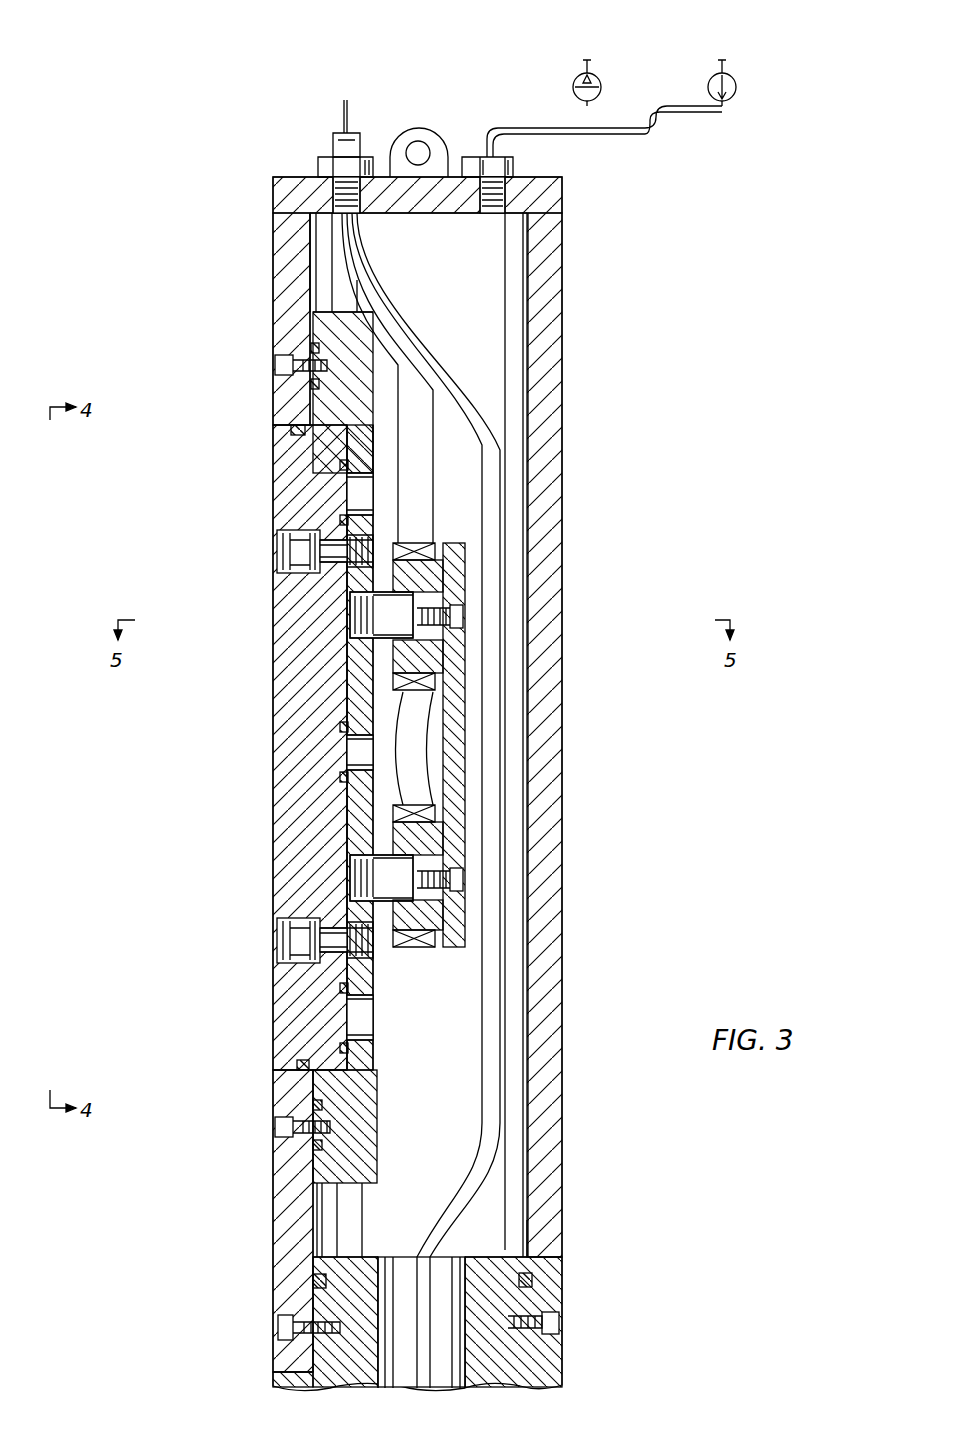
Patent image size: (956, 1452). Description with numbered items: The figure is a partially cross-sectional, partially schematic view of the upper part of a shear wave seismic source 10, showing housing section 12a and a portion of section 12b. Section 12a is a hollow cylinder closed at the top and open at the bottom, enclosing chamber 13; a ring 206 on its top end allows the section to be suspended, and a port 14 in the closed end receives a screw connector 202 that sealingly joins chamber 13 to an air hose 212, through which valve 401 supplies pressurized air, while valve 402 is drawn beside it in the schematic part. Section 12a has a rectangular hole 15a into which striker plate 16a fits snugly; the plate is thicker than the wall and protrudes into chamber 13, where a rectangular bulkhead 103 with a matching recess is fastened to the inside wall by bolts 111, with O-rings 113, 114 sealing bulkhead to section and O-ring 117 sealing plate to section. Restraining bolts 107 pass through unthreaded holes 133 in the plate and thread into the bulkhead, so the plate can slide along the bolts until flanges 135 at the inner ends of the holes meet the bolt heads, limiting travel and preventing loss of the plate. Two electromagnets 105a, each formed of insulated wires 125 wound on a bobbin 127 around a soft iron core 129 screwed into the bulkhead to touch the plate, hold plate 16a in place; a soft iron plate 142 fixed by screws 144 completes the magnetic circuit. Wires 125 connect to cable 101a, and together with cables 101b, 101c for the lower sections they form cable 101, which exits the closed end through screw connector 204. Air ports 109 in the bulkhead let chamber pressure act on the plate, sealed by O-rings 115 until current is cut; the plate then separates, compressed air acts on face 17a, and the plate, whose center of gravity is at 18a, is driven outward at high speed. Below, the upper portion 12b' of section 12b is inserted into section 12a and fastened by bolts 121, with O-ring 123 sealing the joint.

The seismic source 10 is at (617, 200).
The housing section 12a is at (548, 271).
The housing section 12b is at (460, 1322).
The upper portion of section 12b 12b' is at (575, 1225).
The chamber 13 is at (421, 264).
The port 14 is at (487, 218).
The rectangular hole 15a is at (296, 425).
The striker plate 16a is at (345, 897).
The face of striker plate 17a is at (345, 832).
The center of gravity 18a is at (312, 772).
The cable 101 is at (343, 101).
The cable 101a is at (345, 258).
The cable 101b is at (495, 395).
The cable 101c is at (455, 358).
The bulkhead 103 is at (340, 792).
The electromagnets 105a is at (455, 812).
The restraining bolts 107 is at (345, 551).
The air ports 109 is at (356, 494).
The bolts 111 is at (275, 360).
The O-ring 113 is at (310, 346).
The O-ring 114 is at (308, 386).
The O-rings 115 is at (340, 475).
The O-ring 117 is at (300, 432).
The bolts 121 is at (278, 1322).
The O-ring 123 is at (316, 1282).
The insulated wires 125 is at (465, 683).
The bobbin 127 is at (465, 547).
The soft iron core 129 is at (388, 620).
The holes 133 is at (275, 557).
The flanges 135 is at (350, 596).
The soft iron plate 142 is at (465, 830).
The screws 144 is at (465, 614).
The screw connector 202 is at (510, 160).
The screw connector 204 is at (325, 160).
The ring 206 is at (417, 138).
The air hose 212 is at (655, 124).
The valve 401 is at (738, 88).
The exhaust vacuum valve 402 is at (572, 90).